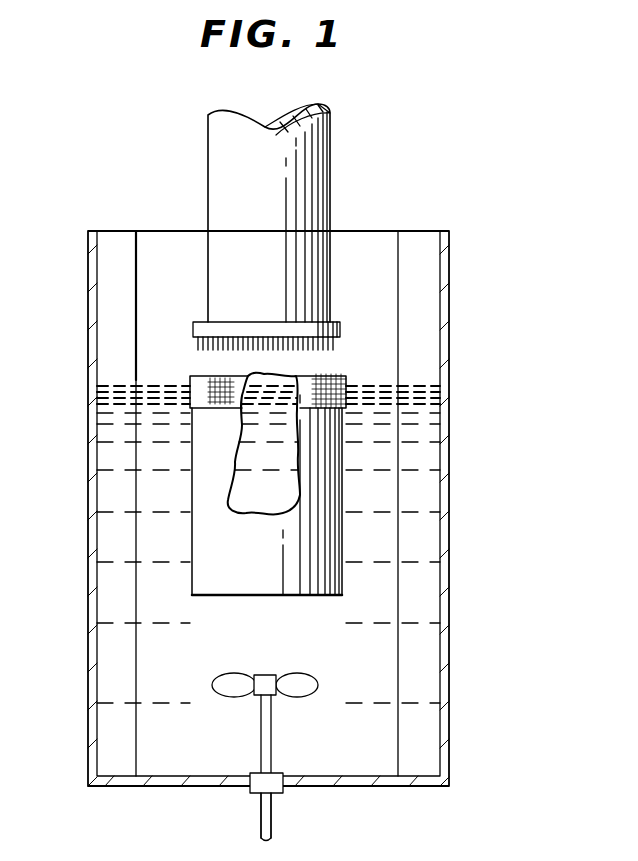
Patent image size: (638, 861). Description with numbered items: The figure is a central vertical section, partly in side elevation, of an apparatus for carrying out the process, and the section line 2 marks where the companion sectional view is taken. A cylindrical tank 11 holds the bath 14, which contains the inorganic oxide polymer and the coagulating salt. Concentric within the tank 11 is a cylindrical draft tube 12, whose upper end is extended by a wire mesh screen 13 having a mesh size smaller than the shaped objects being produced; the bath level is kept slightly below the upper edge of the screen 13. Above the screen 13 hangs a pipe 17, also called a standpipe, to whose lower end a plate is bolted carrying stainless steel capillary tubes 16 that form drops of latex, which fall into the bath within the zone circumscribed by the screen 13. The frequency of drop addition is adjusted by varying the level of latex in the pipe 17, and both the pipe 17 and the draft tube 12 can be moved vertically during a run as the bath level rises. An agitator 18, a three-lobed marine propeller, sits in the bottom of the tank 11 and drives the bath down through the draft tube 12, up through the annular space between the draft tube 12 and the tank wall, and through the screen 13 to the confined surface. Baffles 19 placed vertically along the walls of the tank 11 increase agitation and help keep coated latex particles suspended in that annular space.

The cylindrical tank 11 is at (450, 556).
The draft tube 12 is at (342, 585).
The wire mesh screen 13 is at (346, 374).
The bath 14 is at (187, 648).
The capillary tubes 16 is at (328, 349).
The pipe 17 is at (330, 272).
The agitator 18 is at (300, 700).
The baffles 19 is at (111, 231).
The section line 2- 2 is at (20, 398).